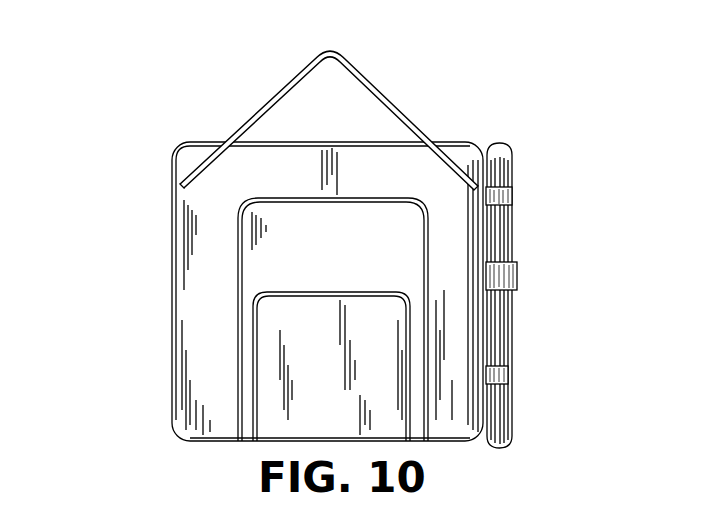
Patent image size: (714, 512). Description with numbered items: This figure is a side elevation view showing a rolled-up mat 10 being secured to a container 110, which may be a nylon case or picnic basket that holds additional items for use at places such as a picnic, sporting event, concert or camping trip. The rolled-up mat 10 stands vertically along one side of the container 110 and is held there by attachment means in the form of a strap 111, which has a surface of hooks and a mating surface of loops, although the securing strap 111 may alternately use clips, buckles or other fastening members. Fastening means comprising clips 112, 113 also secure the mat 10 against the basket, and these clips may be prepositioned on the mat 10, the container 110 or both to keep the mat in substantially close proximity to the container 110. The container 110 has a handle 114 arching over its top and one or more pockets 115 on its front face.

The container 110 is at (176, 85).
The rolled-up mat 10 is at (512, 228).
The strap 111 is at (506, 280).
The clip 112 is at (513, 192).
The clip 113 is at (498, 378).
The handle 114 is at (360, 70).
The pocket 115 is at (273, 360).